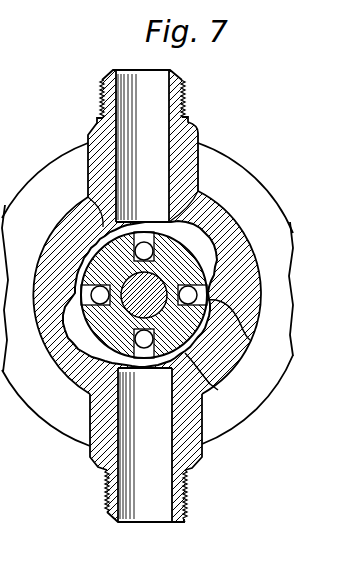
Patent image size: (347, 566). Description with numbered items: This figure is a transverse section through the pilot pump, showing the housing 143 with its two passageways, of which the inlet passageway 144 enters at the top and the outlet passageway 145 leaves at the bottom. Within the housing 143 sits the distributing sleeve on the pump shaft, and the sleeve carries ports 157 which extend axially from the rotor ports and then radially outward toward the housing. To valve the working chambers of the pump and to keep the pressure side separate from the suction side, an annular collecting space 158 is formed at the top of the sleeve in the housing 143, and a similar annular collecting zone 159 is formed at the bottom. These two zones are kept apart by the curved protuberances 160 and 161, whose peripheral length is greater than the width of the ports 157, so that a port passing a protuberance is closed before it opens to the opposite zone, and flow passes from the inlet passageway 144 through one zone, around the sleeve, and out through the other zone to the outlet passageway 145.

The housing 143 is at (217, 149).
The inlet passageway 144 is at (128, 70).
The outlet passageway 145 is at (155, 508).
The ports 157 is at (88, 198).
The annular collecting space 158 is at (203, 213).
The annular collecting zone 159 is at (213, 385).
The curved protuberance 160 is at (249, 337).
The curved protuberance 161 is at (58, 358).